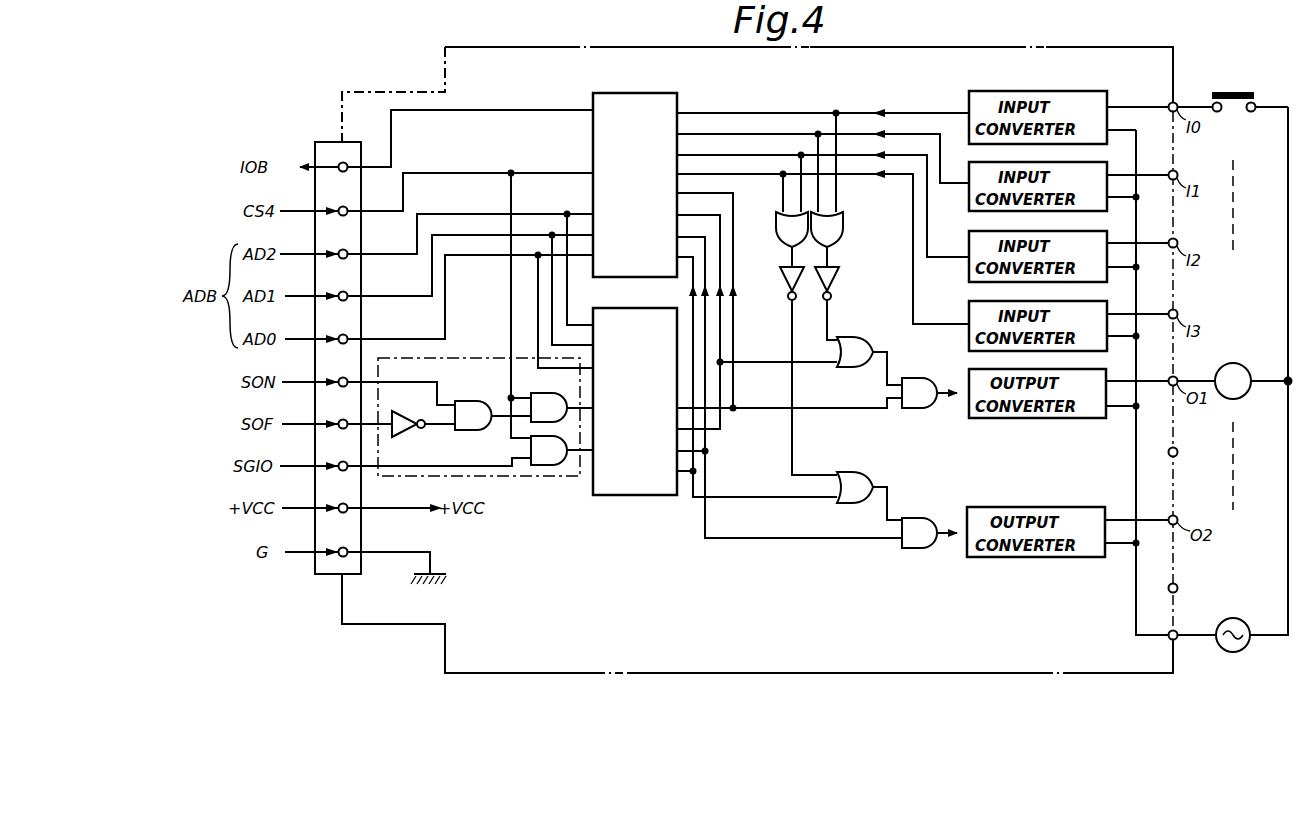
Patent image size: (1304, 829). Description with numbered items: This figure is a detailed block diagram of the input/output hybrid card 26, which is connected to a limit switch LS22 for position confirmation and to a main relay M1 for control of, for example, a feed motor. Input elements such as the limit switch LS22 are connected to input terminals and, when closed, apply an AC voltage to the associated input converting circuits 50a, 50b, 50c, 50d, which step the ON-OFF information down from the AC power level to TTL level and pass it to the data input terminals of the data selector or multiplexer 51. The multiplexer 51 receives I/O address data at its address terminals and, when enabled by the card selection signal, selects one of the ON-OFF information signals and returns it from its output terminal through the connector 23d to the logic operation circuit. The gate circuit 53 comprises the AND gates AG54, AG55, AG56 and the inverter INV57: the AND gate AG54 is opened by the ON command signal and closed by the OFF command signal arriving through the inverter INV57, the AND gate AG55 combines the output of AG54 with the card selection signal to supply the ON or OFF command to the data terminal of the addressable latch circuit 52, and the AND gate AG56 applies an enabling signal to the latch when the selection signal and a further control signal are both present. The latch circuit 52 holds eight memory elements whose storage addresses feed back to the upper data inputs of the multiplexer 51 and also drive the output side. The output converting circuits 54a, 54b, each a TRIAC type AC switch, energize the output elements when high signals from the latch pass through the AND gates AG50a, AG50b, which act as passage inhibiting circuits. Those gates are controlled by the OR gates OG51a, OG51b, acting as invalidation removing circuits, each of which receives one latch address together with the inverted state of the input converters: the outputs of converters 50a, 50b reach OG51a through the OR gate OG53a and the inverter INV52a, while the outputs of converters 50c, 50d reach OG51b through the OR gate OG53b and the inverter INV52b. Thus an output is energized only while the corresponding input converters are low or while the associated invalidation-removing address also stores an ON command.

The input/output hybrid card 26 is at (980, 46).
The connector 23d is at (326, 139).
The data selector or multiplexer 51 is at (638, 93).
The addressable latch circuit 52 is at (636, 497).
The gate circuit 53 is at (455, 357).
The inverter INV57 is at (405, 408).
The AND gate AG54 is at (468, 430).
The AND gate AG55 is at (531, 397).
The AND gate AG56 is at (548, 466).
The OR gate OG53a is at (834, 235).
The OR gate OG53b is at (778, 224).
The inverter INV52a is at (833, 272).
The inverter INV52b is at (786, 282).
The OR gate OG51a is at (852, 362).
The OR gate OG51b is at (852, 482).
The AND gate AG50a is at (922, 408).
The AND gate AG50b is at (920, 548).
The input converting circuit 50a is at (968, 102).
The input converting circuit 50b is at (968, 197).
The input converting circuit 50c is at (968, 268).
The input converting circuit 50d is at (968, 336).
The output converting circuit 54a is at (1088, 418).
The output converting circuit 54b is at (1088, 557).
The limit switch LS22 is at (1234, 93).
The main relay M1 is at (1234, 364).